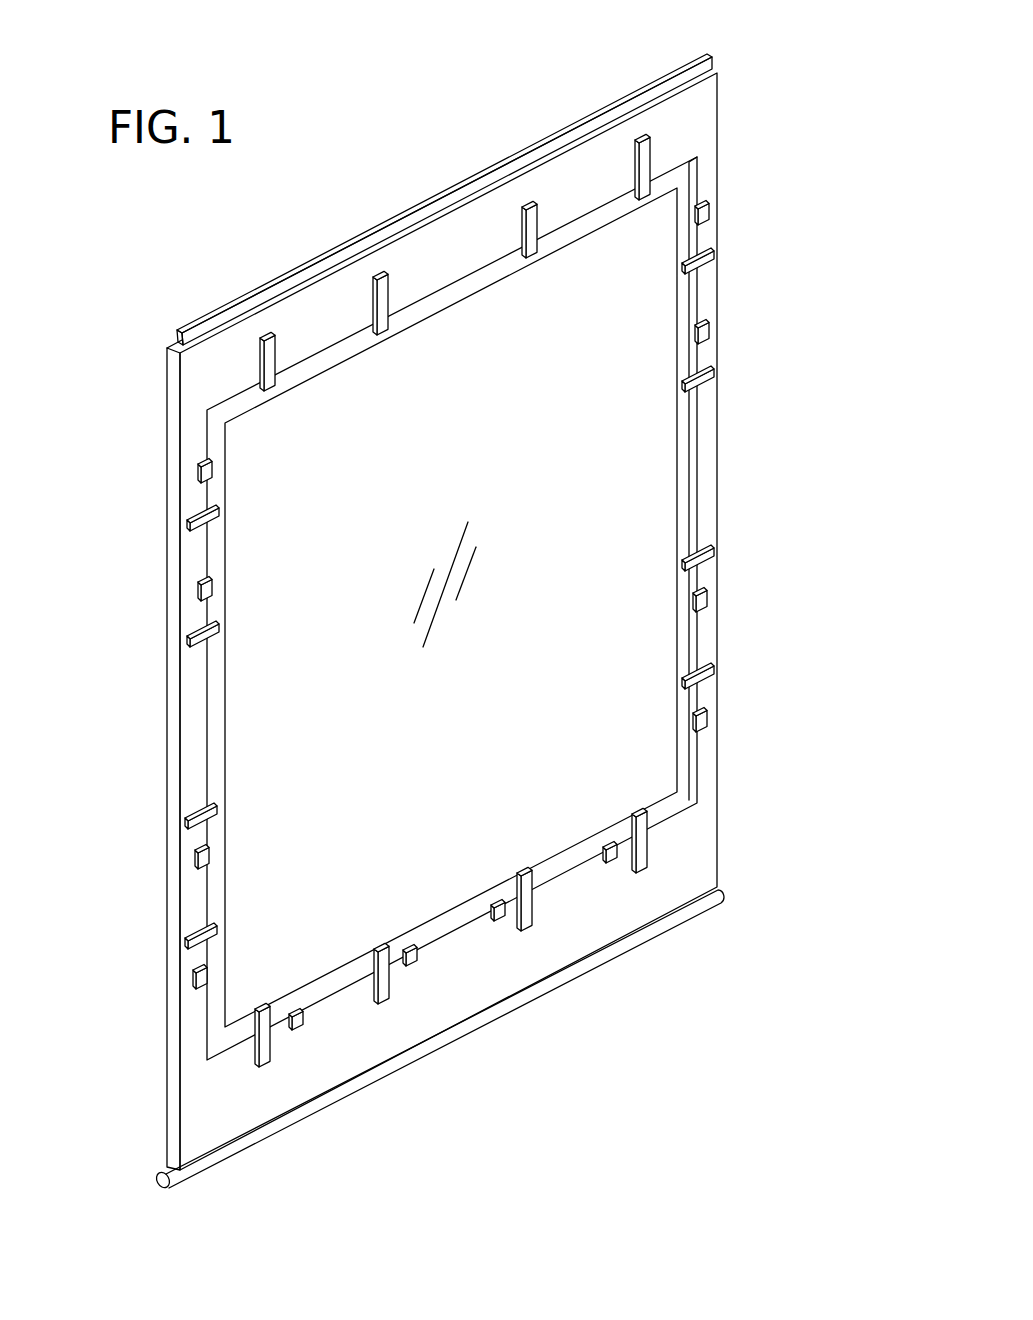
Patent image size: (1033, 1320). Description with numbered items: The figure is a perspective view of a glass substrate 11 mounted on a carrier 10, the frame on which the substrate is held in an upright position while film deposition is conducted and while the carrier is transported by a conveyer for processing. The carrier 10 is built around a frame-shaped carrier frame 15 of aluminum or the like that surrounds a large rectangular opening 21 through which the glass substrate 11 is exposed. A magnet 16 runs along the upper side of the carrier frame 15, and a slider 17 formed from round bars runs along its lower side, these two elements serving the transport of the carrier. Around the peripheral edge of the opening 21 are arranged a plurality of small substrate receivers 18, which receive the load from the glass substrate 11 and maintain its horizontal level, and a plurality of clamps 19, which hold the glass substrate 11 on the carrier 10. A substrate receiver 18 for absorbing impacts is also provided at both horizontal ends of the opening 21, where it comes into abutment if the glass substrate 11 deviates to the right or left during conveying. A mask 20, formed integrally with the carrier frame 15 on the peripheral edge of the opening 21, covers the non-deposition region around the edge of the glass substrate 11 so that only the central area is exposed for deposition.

The carrier 10 is at (745, 94).
The glass substrate 11 is at (642, 640).
The carrier frame 15 is at (712, 470).
The magnet 16 is at (653, 96).
The slider 17 is at (724, 900).
The substrate receiver 18 is at (201, 476).
The clamp 19 is at (640, 150).
The mask 20 is at (465, 288).
The opening 21 is at (428, 330).